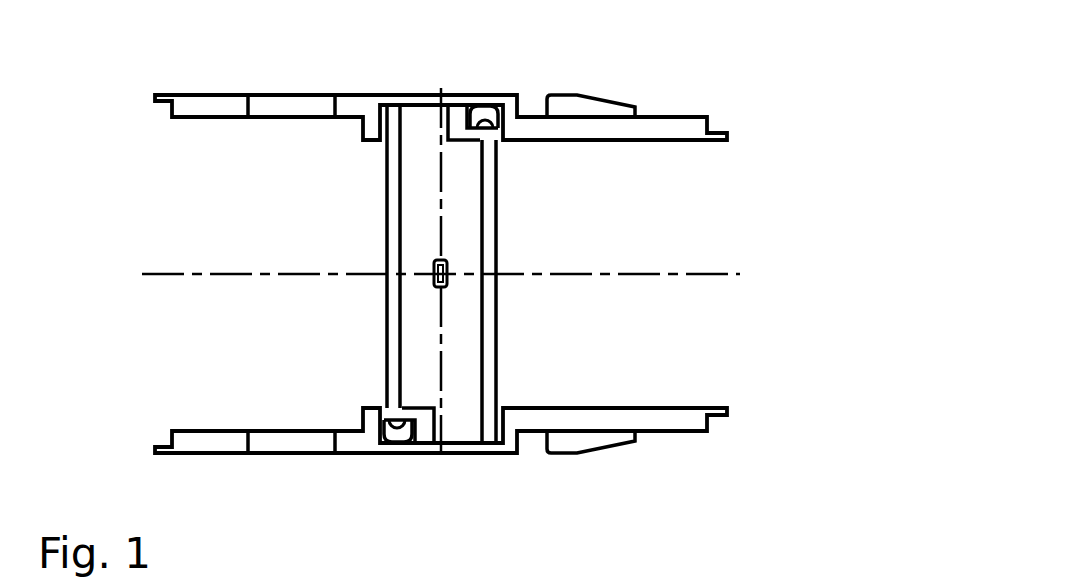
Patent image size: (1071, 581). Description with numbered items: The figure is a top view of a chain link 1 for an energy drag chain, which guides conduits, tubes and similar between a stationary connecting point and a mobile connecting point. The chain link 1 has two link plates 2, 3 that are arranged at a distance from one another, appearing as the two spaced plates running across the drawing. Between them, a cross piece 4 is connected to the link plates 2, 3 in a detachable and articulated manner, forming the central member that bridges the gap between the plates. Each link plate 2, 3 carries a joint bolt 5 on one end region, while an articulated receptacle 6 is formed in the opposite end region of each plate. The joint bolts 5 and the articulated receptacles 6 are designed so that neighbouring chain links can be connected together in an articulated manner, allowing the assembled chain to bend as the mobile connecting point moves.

The chain link 1 is at (672, 80).
The link plate 2 is at (352, 108).
The link plate 3 is at (361, 440).
The cross piece 4 is at (462, 362).
The joint bolt 5 is at (582, 440).
The articulated receptacle 6 is at (287, 105).